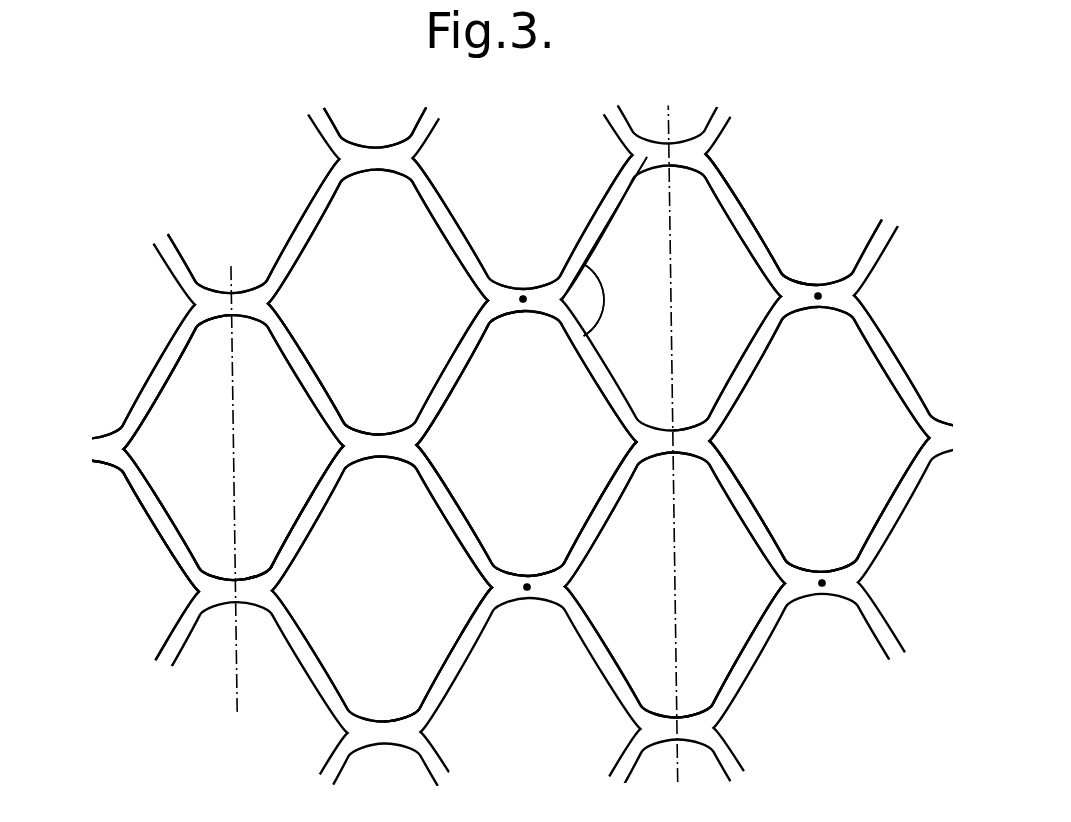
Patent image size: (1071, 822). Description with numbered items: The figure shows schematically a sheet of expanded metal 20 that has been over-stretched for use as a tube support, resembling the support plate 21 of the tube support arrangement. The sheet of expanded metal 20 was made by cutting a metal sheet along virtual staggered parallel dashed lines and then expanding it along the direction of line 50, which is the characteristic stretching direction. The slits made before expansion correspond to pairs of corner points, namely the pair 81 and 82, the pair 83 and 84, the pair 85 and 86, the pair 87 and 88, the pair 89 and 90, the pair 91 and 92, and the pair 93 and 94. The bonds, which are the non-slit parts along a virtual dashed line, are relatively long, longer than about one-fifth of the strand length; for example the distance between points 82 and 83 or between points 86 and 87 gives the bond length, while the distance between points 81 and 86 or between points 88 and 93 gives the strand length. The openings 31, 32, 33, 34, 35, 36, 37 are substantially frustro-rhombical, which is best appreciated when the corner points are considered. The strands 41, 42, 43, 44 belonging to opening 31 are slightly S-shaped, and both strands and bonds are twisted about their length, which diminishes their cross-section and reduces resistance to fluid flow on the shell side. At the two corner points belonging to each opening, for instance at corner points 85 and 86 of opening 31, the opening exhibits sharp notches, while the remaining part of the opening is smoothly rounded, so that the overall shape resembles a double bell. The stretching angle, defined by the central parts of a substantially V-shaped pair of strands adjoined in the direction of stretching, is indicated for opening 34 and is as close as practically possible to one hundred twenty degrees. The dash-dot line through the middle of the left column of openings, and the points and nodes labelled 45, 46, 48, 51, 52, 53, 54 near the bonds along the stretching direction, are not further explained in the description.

The sheet of expanded metal 20 is at (168, 624).
The support plate 21 is at (93, 461).
The opening 31 is at (162, 394).
The opening 32 is at (383, 152).
The opening 33 is at (550, 352).
The opening 34 is at (718, 198).
The opening 35 is at (932, 317).
The opening 36 is at (745, 657).
The opening 37 is at (438, 677).
The strand 41 is at (172, 344).
The strand 42 is at (140, 508).
The strand 43 is at (372, 333).
The strand 44 is at (320, 508).
The node 45 is at (225, 292).
The node 46 is at (222, 598).
The longitudinal axis 48 is at (238, 642).
The characteristic direction 50 is at (742, 59).
The connection point 51 is at (523, 297).
The connection point 52 is at (527, 590).
The connection point 53 is at (845, 220).
The connection point 54 is at (822, 587).
The corner point 81 is at (271, 303).
The corner point 82 is at (489, 300).
The corner point 83 is at (556, 281).
The corner point 84 is at (783, 296).
The corner point 85 is at (123, 448).
The corner point 86 is at (340, 447).
The corner point 87 is at (422, 446).
The corner point 88 is at (633, 441).
The corner point 89 is at (715, 441).
The corner point 90 is at (930, 437).
The corner point 91 is at (272, 590).
The corner point 92 is at (489, 589).
The corner point 93 is at (566, 589).
The corner point 94 is at (784, 590).